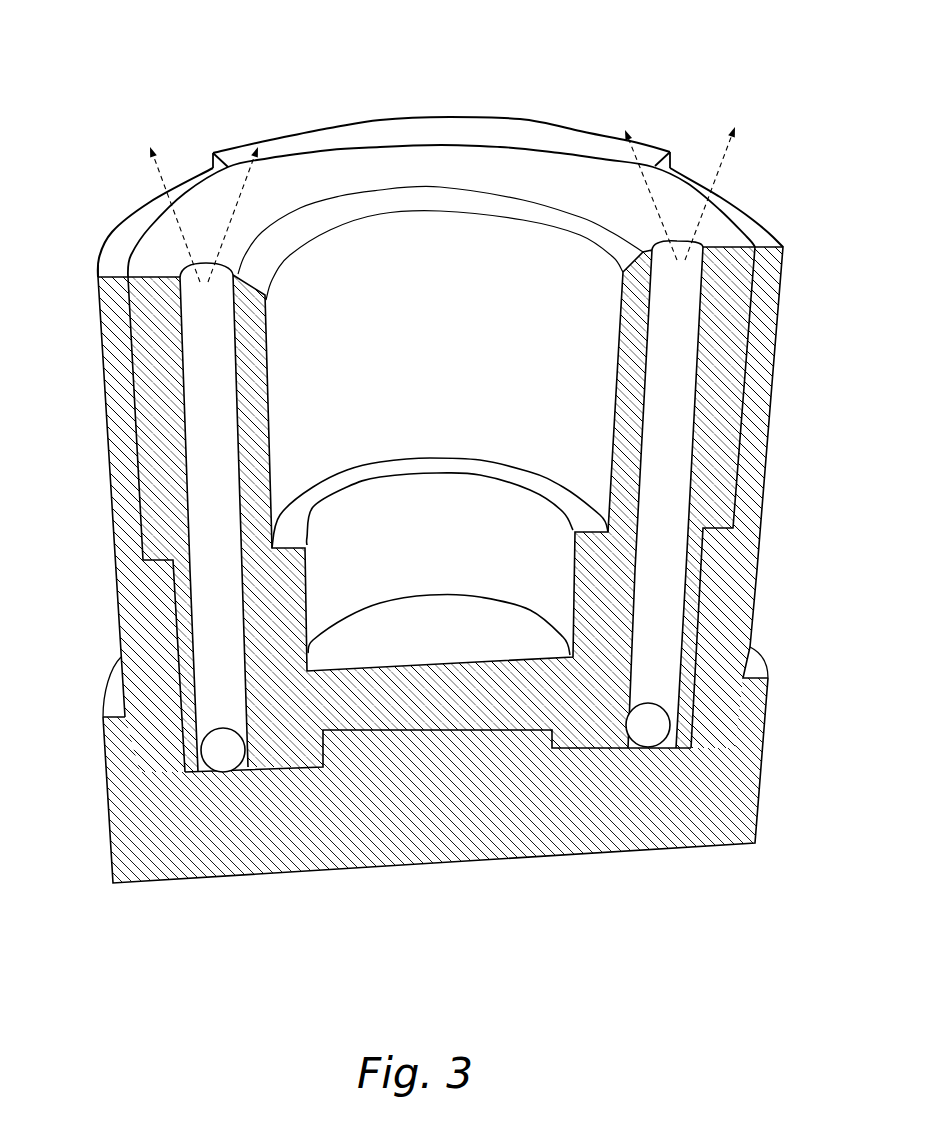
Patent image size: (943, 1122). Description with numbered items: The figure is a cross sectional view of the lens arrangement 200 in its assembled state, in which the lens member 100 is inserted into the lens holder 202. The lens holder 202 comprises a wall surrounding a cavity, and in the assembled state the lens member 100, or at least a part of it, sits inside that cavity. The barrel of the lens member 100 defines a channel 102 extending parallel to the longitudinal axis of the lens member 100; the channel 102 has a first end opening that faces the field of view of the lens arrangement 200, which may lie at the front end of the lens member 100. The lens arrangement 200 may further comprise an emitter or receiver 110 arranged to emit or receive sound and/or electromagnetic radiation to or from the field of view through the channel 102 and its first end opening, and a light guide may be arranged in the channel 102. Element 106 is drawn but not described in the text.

The lens arrangement 200 is at (96, 98).
The lens member 100 is at (733, 282).
The channel 102 is at (670, 425).
The opening 106 is at (483, 270).
The emitter or receiver 110 is at (222, 750).
The lens holder 202 is at (215, 845).